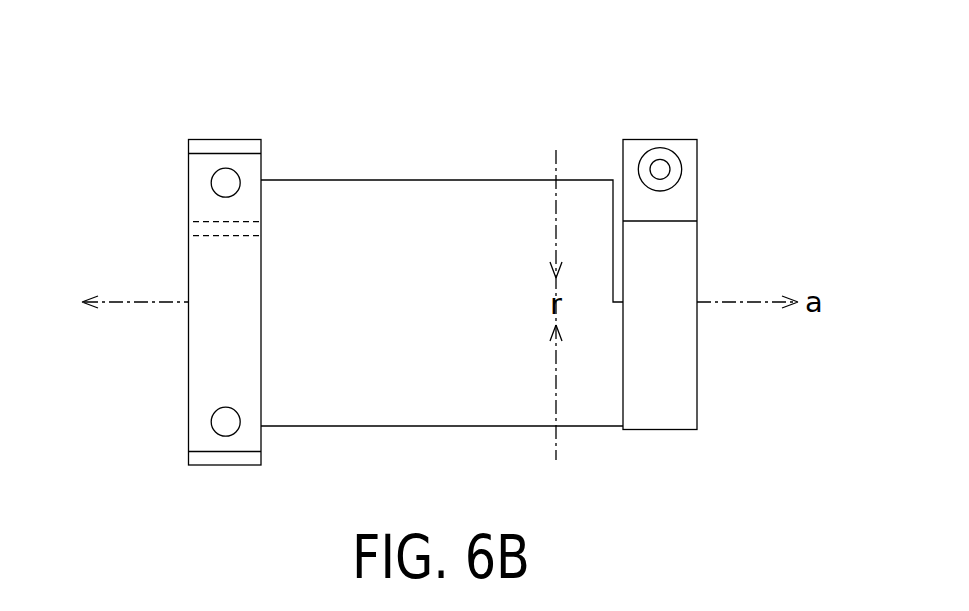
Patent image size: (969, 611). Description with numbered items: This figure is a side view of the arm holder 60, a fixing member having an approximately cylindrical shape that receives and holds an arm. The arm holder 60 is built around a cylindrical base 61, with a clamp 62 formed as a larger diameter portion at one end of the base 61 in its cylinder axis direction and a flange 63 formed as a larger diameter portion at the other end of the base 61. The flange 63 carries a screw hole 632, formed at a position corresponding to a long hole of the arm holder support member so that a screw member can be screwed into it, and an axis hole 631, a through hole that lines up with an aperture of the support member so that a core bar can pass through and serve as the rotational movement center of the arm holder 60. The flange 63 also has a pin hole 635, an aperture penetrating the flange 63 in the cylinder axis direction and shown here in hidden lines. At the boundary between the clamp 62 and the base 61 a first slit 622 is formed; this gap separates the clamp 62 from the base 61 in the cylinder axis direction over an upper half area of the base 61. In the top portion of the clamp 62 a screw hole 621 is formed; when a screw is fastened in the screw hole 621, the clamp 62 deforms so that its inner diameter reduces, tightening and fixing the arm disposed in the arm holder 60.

The arm holder 60 is at (67, 46).
The cylindrical base 61 is at (396, 208).
The clamp 62 is at (705, 257).
The screw hole 621 is at (670, 168).
The first slit 622 is at (618, 254).
The flange 63 is at (169, 303).
The axis hole 631 is at (210, 423).
The screw hole 632 is at (210, 181).
The pin hole 635 is at (208, 220).